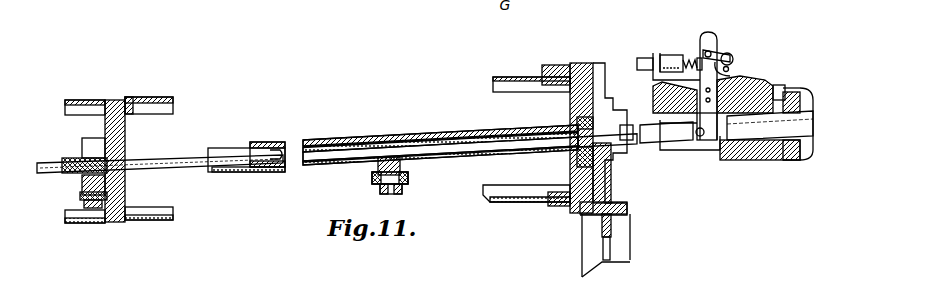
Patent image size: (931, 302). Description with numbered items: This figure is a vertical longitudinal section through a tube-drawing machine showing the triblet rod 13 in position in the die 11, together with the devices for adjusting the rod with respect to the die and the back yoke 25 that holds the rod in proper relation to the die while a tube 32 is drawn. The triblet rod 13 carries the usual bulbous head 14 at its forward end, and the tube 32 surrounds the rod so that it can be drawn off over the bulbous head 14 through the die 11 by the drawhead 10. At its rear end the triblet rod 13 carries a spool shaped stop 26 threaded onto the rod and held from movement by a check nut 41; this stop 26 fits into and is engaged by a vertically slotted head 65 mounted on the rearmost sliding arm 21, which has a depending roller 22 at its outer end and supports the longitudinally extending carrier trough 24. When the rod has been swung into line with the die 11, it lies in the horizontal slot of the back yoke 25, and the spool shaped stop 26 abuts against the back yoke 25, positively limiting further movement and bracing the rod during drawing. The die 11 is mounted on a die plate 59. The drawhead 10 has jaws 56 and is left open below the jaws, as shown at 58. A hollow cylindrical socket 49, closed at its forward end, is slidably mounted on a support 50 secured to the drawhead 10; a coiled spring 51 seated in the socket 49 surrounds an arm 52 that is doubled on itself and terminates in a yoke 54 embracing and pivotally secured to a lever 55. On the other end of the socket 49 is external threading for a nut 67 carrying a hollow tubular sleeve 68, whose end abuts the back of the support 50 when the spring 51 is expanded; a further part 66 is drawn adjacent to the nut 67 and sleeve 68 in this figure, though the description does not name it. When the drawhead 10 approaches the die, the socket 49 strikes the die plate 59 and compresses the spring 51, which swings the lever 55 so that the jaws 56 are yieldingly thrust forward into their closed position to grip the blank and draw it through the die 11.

The drawhead 10 is at (745, 80).
The die 11 is at (577, 127).
The triblet rod 13 is at (170, 157).
The bulbous head 14 is at (570, 148).
The sliding arm 21 is at (373, 182).
The roller 22 is at (82, 210).
The carrier trough 24 is at (232, 170).
The back yoke 25 is at (128, 140).
The spool shaped stop 26 is at (80, 178).
The tube 32 is at (270, 143).
The check nut 41 is at (75, 160).
The hollow cylindrical socket 49 is at (645, 58).
The support 50 is at (656, 53).
The coiled spring 51 is at (731, 71).
The arm 52 is at (733, 56).
The yoke 54 is at (713, 52).
The lever 55 is at (711, 35).
The jaws 56 is at (670, 144).
The open portion of the drawhead 58 is at (690, 144).
The die plate 59 is at (580, 62).
The vertically slotted head 65 is at (85, 143).
The pin 66 is at (700, 56).
The nut 67 is at (687, 58).
The hollow tubular sleeve 68 is at (670, 55).